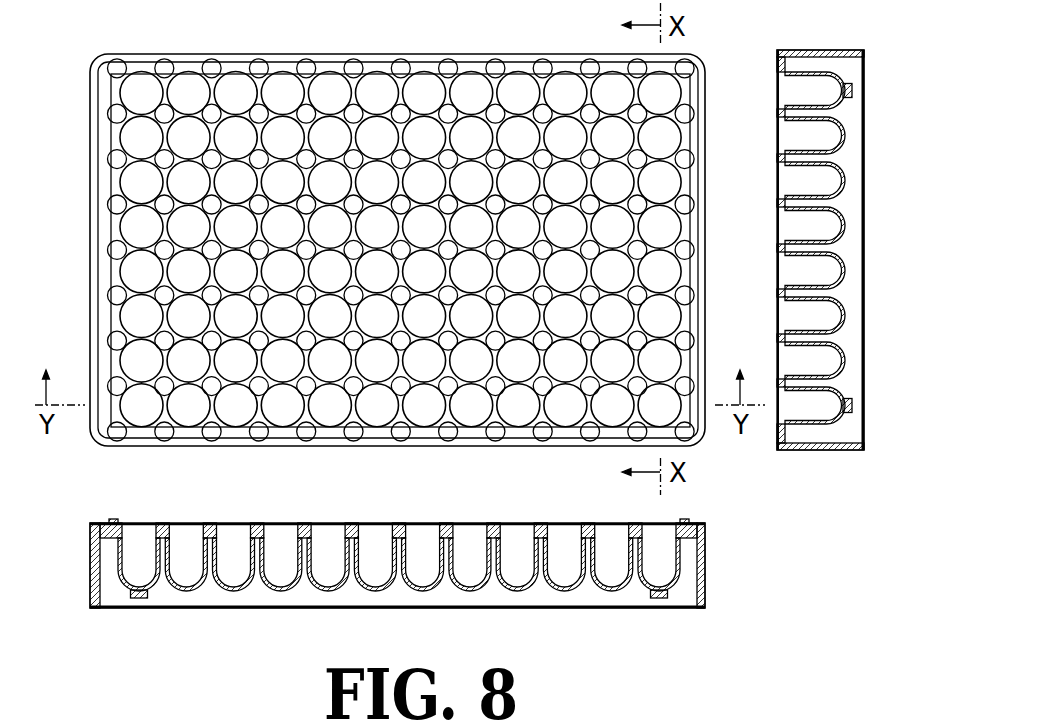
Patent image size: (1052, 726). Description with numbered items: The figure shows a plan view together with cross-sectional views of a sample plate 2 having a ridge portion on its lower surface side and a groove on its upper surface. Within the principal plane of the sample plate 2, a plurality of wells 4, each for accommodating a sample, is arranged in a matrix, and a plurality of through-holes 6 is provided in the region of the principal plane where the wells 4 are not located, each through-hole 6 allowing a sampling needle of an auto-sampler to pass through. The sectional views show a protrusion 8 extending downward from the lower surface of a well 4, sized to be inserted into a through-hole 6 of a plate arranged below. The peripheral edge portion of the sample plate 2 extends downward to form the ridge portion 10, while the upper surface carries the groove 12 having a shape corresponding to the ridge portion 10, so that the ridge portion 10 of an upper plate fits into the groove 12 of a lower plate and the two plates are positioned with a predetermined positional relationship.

The sample plate 2 is at (368, 53).
The well 4 is at (471, 92).
The through-hole 6 is at (543, 63).
The protrusion 8 is at (853, 90).
The ridge portion 10 is at (845, 53).
The groove 12 is at (283, 66).